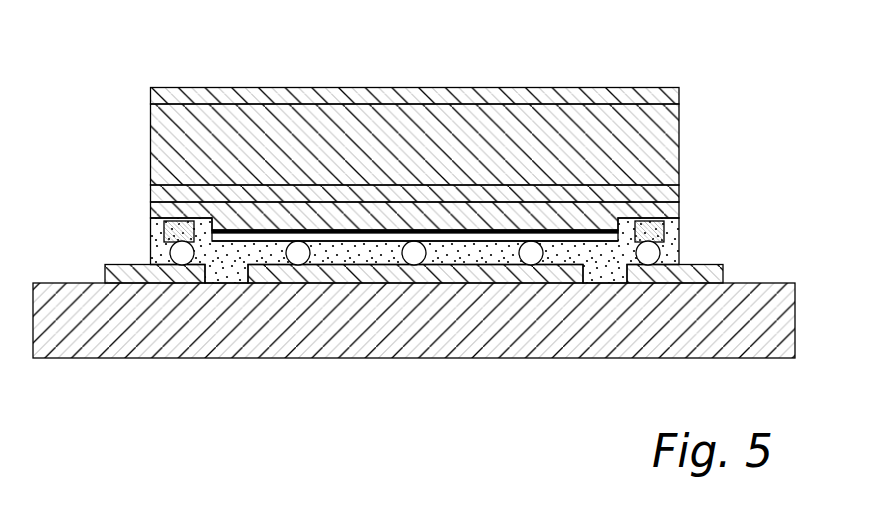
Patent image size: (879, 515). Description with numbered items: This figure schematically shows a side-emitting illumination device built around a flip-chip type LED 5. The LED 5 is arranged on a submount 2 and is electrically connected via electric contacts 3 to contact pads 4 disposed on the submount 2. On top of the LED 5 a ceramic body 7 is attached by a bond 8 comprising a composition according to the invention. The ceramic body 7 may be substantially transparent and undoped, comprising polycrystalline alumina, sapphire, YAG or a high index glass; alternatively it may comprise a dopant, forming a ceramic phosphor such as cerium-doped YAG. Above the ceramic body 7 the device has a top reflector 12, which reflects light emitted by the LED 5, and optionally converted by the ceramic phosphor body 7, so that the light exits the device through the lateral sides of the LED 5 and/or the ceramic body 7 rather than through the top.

The submount 2 is at (90, 340).
The electric contacts 3 is at (178, 255).
The contact pads 4 is at (443, 275).
The flip-chip type LED 5 is at (673, 212).
The ceramic body 7 is at (673, 135).
The bond 8 is at (673, 195).
The top reflector 12 is at (418, 103).